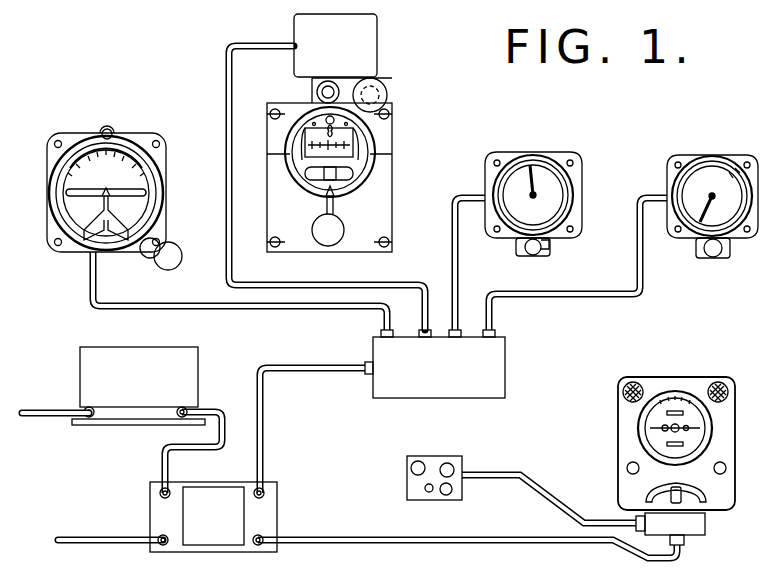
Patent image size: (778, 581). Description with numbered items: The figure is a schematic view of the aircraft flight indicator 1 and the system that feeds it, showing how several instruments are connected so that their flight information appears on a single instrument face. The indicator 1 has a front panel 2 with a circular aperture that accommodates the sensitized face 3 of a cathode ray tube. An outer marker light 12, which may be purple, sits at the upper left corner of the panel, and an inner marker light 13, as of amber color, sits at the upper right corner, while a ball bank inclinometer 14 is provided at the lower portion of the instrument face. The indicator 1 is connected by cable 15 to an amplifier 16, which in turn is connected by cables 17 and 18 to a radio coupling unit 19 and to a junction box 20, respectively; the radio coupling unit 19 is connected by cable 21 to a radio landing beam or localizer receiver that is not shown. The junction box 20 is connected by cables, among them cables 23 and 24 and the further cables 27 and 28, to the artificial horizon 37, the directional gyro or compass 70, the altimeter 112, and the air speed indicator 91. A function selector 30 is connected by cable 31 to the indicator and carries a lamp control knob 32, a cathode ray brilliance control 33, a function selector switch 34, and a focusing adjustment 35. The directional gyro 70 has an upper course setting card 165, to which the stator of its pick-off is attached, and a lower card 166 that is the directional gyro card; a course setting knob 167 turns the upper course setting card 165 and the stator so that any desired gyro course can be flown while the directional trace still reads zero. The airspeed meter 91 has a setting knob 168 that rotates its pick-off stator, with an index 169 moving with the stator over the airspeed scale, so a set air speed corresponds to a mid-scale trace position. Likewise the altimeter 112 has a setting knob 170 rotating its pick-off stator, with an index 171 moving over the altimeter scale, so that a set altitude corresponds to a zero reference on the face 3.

The aircraft flight indicator 1 is at (683, 441).
The front panel 2 is at (683, 441).
The cathode ray tube face 3 is at (693, 421).
The outer marker light 12 is at (630, 381).
The inner marker light 13 is at (723, 384).
The ball bank inclinometer 14 is at (690, 497).
The cable 15 is at (422, 543).
The amplifier 16 is at (277, 518).
The cable 17 is at (163, 459).
The cable 18 is at (263, 456).
The radio coupling unit 19 is at (79, 379).
The junction box 20 is at (414, 396).
The cable 21 is at (88, 422).
The cable 23 is at (370, 283).
The cable 24 is at (462, 271).
The conductor 27 is at (344, 309).
The conductor 28 is at (495, 306).
The function selector 30 is at (428, 481).
The cable 31 is at (510, 471).
The lamp control knob 32 is at (453, 465).
The cathode ray brilliance control 33 is at (420, 461).
The function selector switch 34 is at (452, 493).
The focusing adjustment 35 is at (425, 490).
The artificial horizon 37 is at (52, 250).
The directional gyro 70 is at (333, 133).
The air speed indicator 91 is at (722, 213).
The altimeter 112 is at (550, 202).
The upper course setting card 165 is at (300, 128).
The lower card 166 is at (302, 158).
The course setting knob 167 is at (385, 88).
The setting knob 168 is at (716, 258).
The index 169 is at (730, 175).
The setting knob 170 is at (533, 256).
The index 171 is at (550, 245).